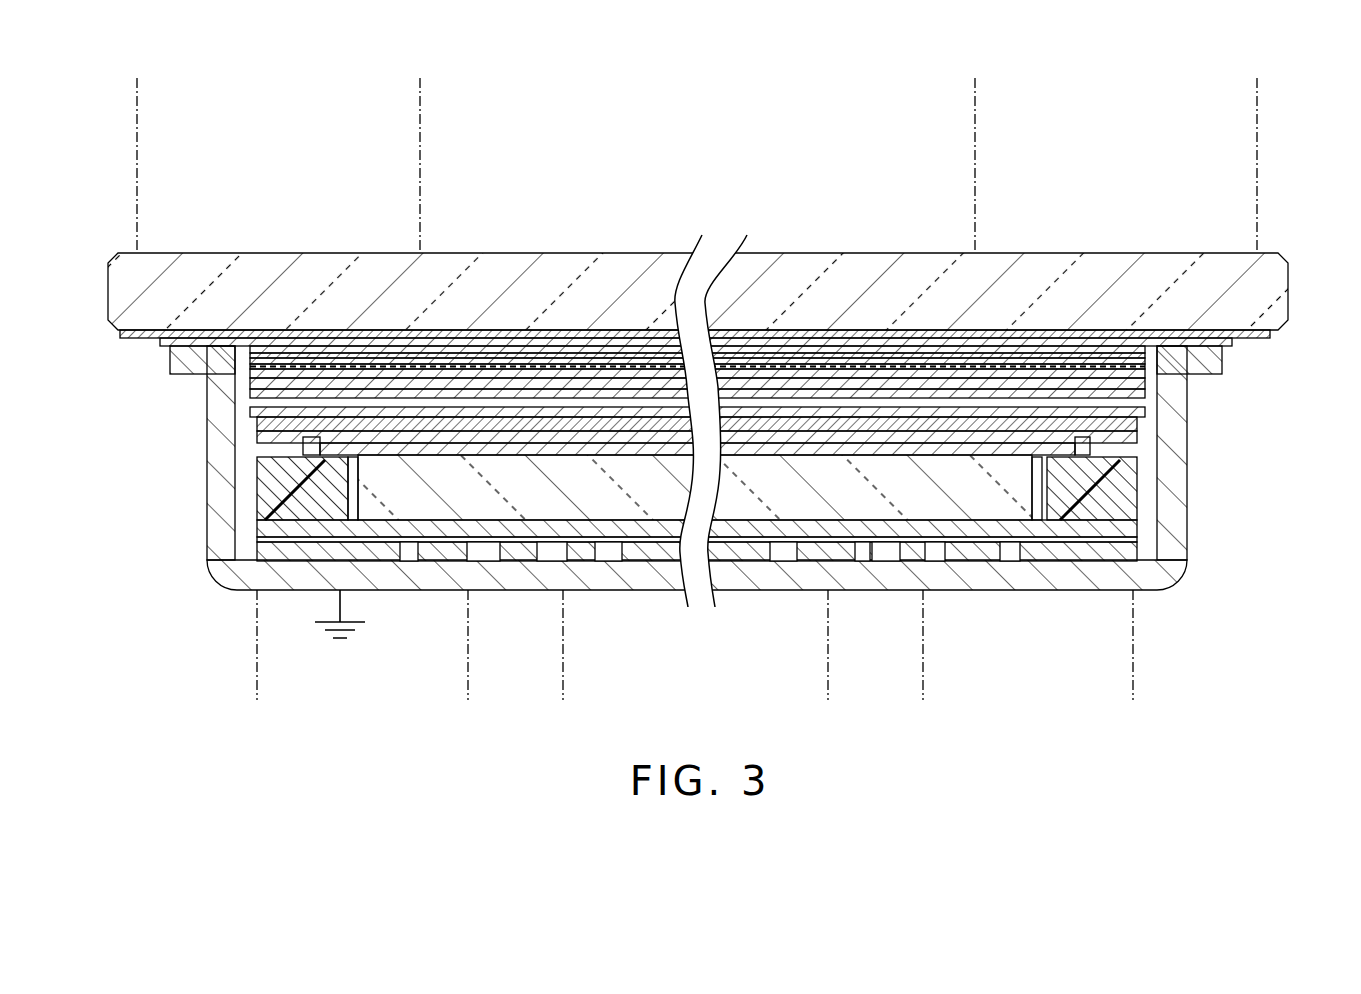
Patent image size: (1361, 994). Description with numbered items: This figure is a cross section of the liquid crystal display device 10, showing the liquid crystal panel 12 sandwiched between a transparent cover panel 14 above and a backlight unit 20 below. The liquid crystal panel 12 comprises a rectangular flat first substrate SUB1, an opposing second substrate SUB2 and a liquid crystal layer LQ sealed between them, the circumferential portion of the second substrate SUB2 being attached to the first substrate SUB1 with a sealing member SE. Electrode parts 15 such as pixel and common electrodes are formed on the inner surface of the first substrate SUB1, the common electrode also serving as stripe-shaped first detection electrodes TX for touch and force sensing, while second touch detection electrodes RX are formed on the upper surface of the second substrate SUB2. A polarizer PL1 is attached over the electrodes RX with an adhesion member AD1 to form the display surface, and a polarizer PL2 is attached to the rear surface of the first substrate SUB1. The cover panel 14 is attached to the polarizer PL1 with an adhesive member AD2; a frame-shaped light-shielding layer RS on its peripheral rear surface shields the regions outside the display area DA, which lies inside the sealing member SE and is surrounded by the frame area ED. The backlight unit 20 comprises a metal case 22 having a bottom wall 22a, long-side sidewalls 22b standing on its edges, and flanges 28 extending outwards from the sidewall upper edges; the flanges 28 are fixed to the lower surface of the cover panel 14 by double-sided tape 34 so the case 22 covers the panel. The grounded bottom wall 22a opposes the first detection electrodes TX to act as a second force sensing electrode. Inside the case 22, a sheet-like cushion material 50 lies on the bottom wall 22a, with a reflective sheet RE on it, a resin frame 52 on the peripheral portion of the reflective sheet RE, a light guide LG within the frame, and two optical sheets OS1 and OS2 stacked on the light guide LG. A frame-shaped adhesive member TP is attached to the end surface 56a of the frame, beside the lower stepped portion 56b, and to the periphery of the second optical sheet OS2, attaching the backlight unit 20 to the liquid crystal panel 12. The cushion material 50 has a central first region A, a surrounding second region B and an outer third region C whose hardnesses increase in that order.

The liquid crystal display device 10 is at (1208, 246).
The liquid crystal panel 12 is at (697, 270).
The cover panel 14 is at (200, 270).
The electrode parts 15 is at (905, 352).
The backlight unit 20 is at (225, 541).
The case 22 is at (1030, 593).
The bottom wall 22a is at (656, 575).
The long-side sidewalls 22b is at (222, 486).
The flanges 28 is at (220, 365).
The double-sided tape 34 is at (195, 340).
The cushion material 50 is at (1095, 552).
The frame 52 is at (280, 505).
The end surface 56a is at (1135, 447).
The stepped portion 56b is at (1135, 492).
The light-shielding layer RS is at (1245, 342).
The sealing member SE is at (325, 328).
The adhesion member AD1 is at (1035, 345).
The adhesive member AD2 is at (797, 360).
The polarizer PL1 is at (483, 346).
The polarizer PL2 is at (608, 418).
The liquid crystal layer LQ is at (532, 372).
The first substrate SUB1 is at (580, 390).
The second substrate SUB2 is at (495, 360).
The second touch detection electrodes RX is at (443, 345).
The first detection electrodes TX is at (806, 378).
The adhesive member TP is at (258, 425).
The first optical sheet OS1 is at (320, 450).
The second optical sheet OS2 is at (335, 438).
The light guide LG is at (433, 505).
The reflective sheet RE is at (965, 545).
The frame area ED is at (137, 103).
The display area DA is at (420, 103).
The first region A is at (563, 692).
The second region B is at (563, 692).
The third region C is at (468, 692).